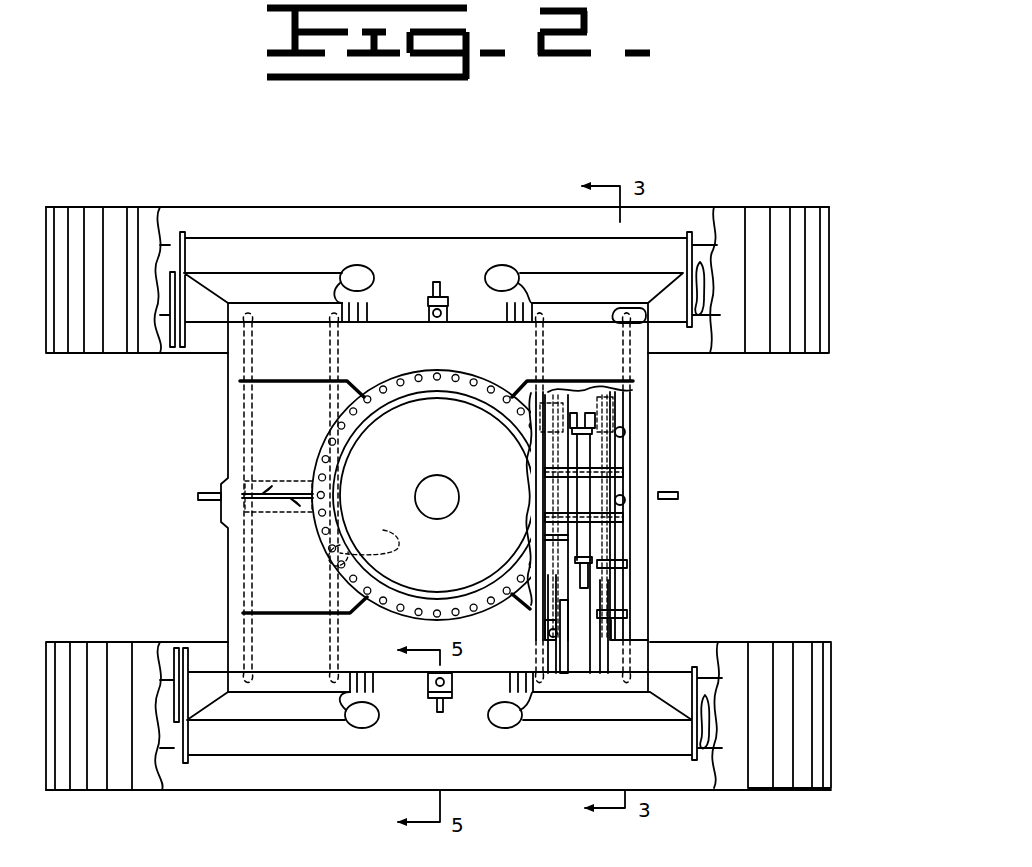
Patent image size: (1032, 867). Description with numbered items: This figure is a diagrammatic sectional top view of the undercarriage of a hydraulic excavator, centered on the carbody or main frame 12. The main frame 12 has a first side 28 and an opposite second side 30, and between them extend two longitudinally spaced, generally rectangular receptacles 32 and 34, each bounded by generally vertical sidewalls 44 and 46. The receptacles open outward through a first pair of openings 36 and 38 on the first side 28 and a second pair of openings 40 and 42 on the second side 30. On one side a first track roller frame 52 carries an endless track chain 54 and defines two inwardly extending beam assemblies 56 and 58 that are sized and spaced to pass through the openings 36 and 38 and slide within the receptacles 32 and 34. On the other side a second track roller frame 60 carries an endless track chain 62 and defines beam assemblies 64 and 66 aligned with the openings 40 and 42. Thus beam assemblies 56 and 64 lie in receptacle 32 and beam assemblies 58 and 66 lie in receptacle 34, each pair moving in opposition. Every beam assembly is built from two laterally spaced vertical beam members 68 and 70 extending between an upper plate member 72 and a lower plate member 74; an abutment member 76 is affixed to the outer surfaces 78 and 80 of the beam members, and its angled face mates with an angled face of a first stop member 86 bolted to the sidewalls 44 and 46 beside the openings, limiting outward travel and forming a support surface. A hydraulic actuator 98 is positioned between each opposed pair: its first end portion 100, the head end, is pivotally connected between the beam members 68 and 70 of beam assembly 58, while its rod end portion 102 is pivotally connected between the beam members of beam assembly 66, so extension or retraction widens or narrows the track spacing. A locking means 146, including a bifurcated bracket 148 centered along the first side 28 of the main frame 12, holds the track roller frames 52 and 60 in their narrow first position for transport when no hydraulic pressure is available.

The main frame 12 is at (233, 402).
The first side 28 is at (653, 687).
The second side 30 is at (640, 352).
The receptacle 32 is at (247, 572).
The receptacle 34 is at (622, 440).
The opening 36 is at (232, 640).
The opening 38 is at (555, 645).
The opening 40 is at (340, 322).
The opening 42 is at (532, 322).
The vertical sidewall 44 is at (240, 500).
The vertical sidewall 46 is at (650, 497).
The first track roller frame 52 is at (650, 742).
The endless track chain 54 is at (828, 737).
The beam assembly 56 is at (338, 477).
The beam assembly 58 is at (558, 505).
The second track roller frame 60 is at (243, 238).
The endless track chain 62 is at (822, 233).
The beam assembly 64 is at (243, 492).
The beam assembly 66 is at (607, 484).
The beam member 68 is at (550, 645).
The beam member 70 is at (603, 663).
The upper plate member 72 is at (548, 543).
The lower plate member 74 is at (627, 537).
The abutment member 76 is at (617, 613).
The outer surface 78 is at (595, 663).
The outer surface 80 is at (590, 572).
The first stop member 86 is at (620, 647).
The hydraulic actuator 98 is at (548, 462).
The first end portion 100 is at (635, 570).
The rod end portion 102 is at (597, 418).
The locking means 146 is at (430, 282).
The bifurcated bracket 148 is at (437, 322).